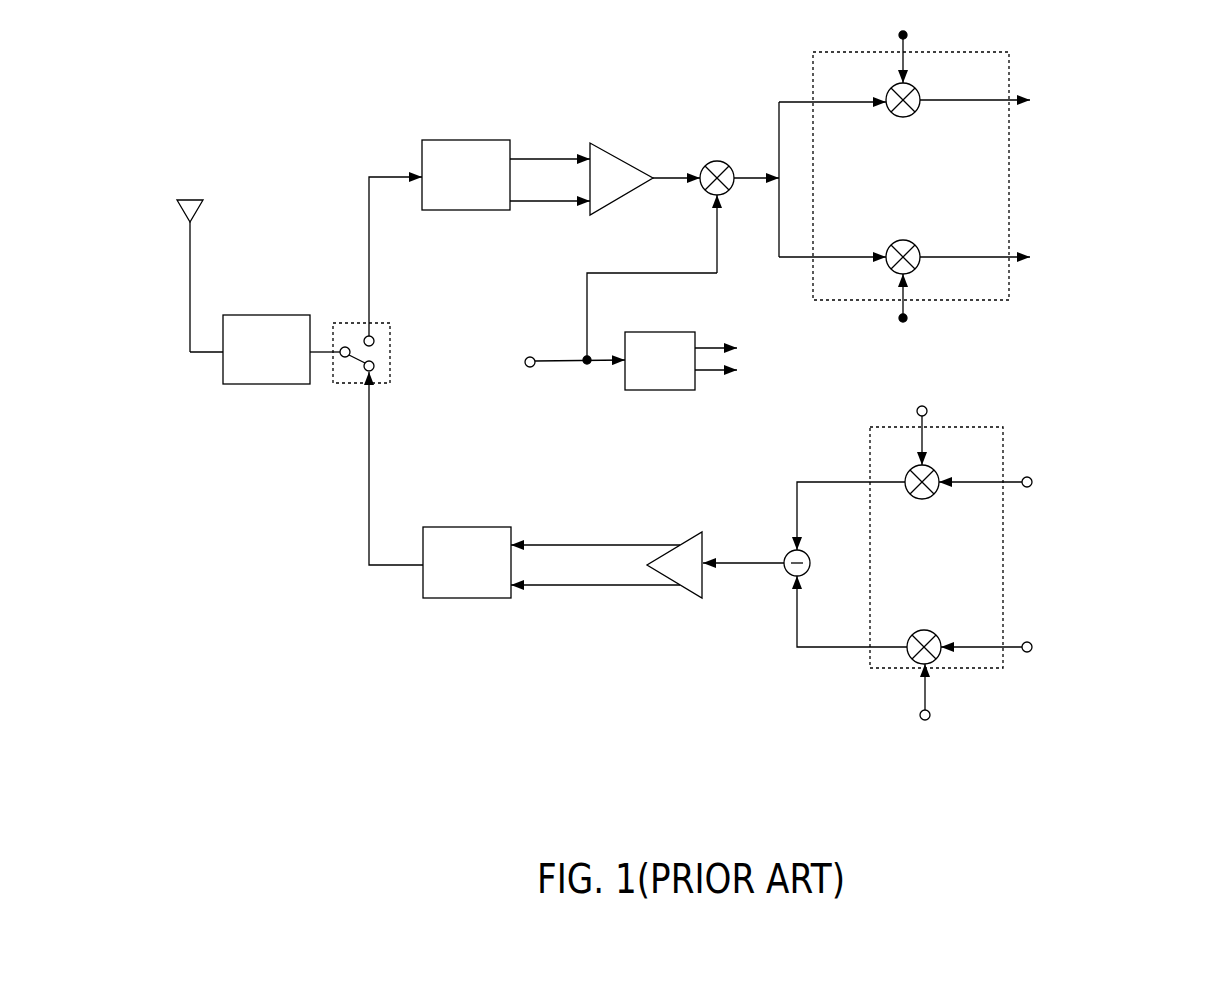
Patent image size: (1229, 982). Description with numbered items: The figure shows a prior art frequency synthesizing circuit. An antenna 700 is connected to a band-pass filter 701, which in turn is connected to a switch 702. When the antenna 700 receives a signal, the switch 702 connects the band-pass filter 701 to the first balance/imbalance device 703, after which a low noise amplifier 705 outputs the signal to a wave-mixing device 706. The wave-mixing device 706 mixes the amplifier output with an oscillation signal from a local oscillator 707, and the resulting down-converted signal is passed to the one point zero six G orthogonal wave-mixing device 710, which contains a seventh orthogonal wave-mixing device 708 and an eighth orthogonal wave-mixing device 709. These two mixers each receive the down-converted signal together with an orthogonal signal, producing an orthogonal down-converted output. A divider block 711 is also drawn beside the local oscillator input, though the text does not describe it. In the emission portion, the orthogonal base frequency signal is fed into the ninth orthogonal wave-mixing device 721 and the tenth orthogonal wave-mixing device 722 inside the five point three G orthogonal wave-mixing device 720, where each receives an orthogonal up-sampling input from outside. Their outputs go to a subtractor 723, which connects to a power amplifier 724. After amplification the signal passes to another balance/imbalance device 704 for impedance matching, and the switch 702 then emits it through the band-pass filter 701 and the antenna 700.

The antenna 700 is at (199, 203).
The band-pass filter 701 is at (230, 366).
The switch 702 is at (392, 351).
The first balance/imbalance device 703 is at (452, 162).
The balance/imbalance device 704 is at (437, 582).
The low noise amplifier 705 is at (610, 165).
The wave-mixing device 706 is at (725, 160).
The local oscillator 707 is at (530, 368).
The seventh orthogonal wave-mixing device 708 is at (897, 117).
The eighth orthogonal wave-mixing device 709 is at (908, 274).
The 1.06 G orthogonal wave-mixing device 710 is at (995, 187).
The divide-by-four frequency divider 711 is at (647, 382).
The 5.3 G orthogonal wave-mixing device 720 is at (978, 567).
The ninth orthogonal wave-mixing device 721 is at (933, 470).
The tenth orthogonal wave-mixing device 722 is at (930, 660).
The subtractor 723 is at (787, 570).
The power amplifier 724 is at (673, 572).